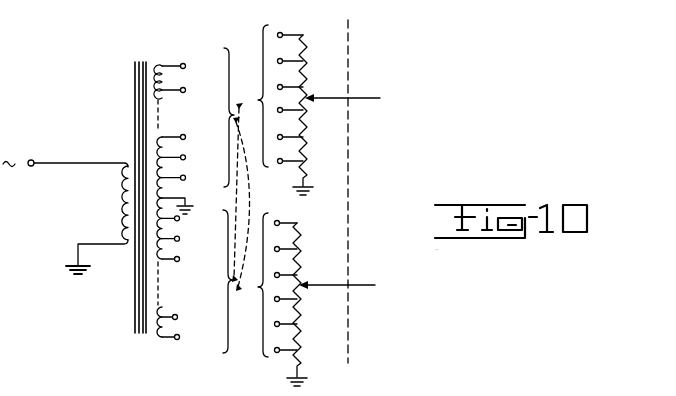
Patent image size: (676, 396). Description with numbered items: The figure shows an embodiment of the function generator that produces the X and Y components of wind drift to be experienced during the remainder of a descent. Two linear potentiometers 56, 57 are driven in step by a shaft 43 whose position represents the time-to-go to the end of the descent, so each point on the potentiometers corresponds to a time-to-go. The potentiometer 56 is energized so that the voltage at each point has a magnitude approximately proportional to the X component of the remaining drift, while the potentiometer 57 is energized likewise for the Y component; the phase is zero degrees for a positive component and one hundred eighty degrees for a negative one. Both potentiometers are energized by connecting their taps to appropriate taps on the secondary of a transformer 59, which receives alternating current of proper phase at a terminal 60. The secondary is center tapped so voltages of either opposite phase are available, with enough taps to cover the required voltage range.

The shaft 43 is at (349, 55).
The linear potentiometer 56 is at (303, 65).
The linear potentiometer 57 is at (297, 260).
The transformer 59 is at (136, 85).
The terminal 60 is at (35, 159).